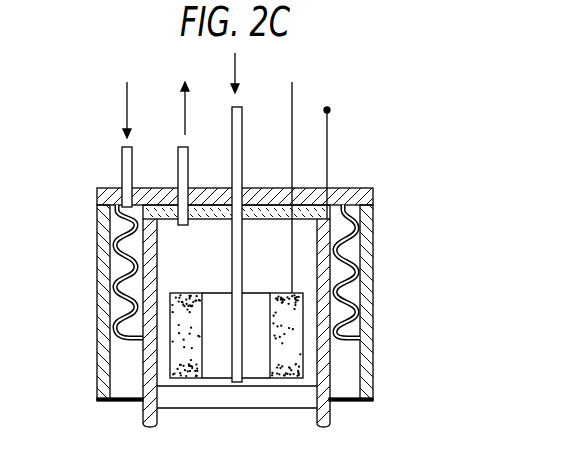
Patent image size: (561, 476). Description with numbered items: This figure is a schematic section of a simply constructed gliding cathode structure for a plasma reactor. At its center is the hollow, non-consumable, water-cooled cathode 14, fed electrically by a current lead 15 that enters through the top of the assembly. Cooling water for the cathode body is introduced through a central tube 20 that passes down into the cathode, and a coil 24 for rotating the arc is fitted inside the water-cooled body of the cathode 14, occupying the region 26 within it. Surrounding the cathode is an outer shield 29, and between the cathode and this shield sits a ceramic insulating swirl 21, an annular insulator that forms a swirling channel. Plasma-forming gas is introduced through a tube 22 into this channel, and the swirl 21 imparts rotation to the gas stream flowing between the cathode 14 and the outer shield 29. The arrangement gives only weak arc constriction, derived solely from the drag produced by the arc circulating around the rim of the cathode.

The cathode 14 is at (331, 407).
The current lead 15 is at (329, 152).
The central tube 20 is at (243, 151).
The ceramic insulating swirl 21 is at (110, 257).
The tube 22 is at (122, 158).
The coil 24 is at (190, 378).
The chamber 26 is at (206, 266).
The outer shield 29 is at (373, 263).